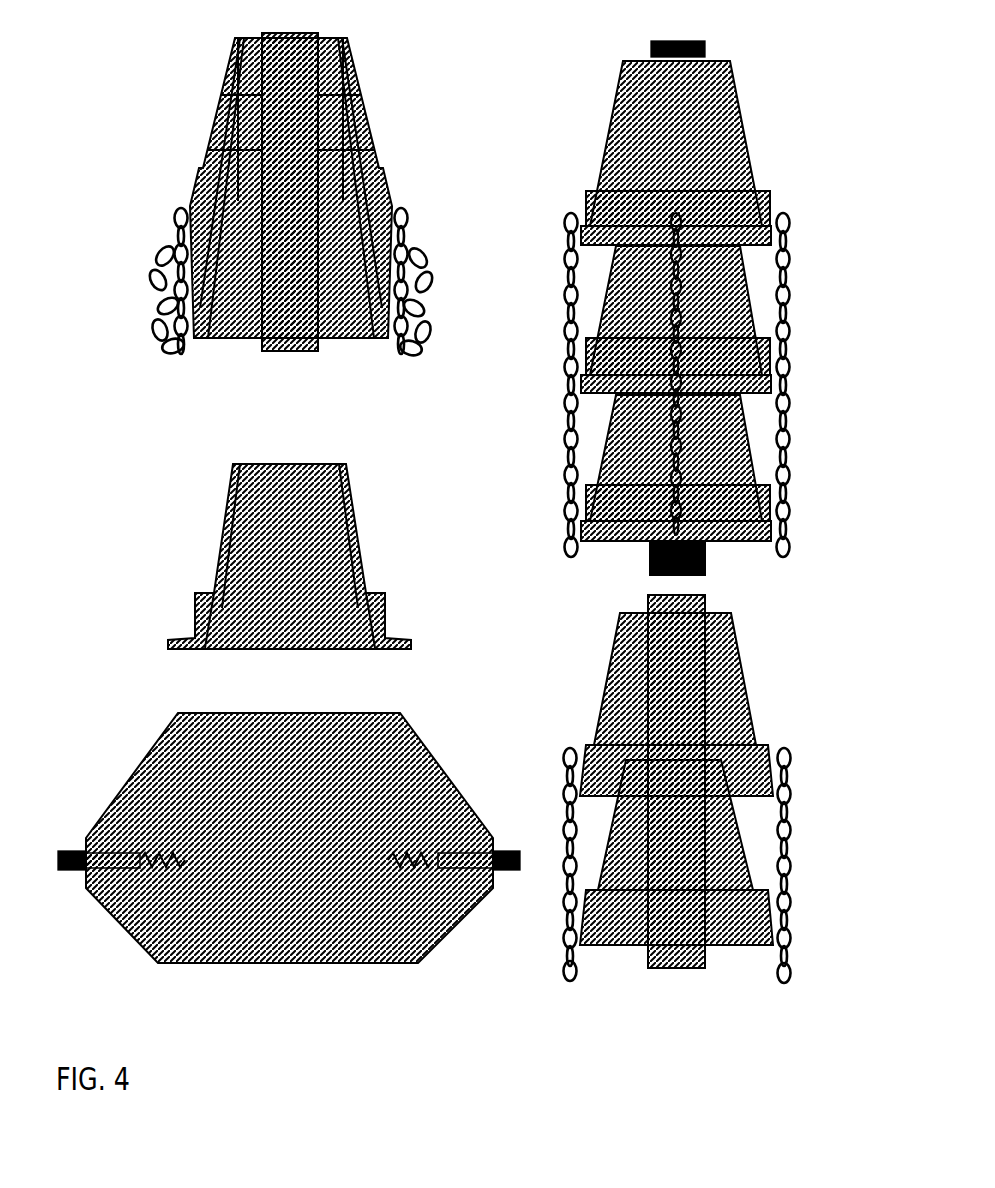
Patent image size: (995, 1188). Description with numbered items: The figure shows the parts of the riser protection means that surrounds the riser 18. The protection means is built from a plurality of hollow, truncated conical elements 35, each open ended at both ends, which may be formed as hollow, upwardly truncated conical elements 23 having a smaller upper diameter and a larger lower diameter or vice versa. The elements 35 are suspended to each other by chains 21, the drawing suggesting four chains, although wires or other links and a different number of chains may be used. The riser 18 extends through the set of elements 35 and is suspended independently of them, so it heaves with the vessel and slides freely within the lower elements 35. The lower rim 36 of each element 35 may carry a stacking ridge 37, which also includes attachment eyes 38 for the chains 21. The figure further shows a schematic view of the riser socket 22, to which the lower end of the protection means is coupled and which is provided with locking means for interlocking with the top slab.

The riser 18 is at (697, 34).
The hollow truncated conical element 35 is at (747, 142).
The stacking ridge 37 is at (767, 187).
The lower rim 36 is at (760, 217).
The chains 21 is at (787, 287).
The attachment eyes 38 is at (773, 380).
The riser socket 22 is at (135, 752).
The hollow upwardly truncated conical elements 23 is at (62, 840).